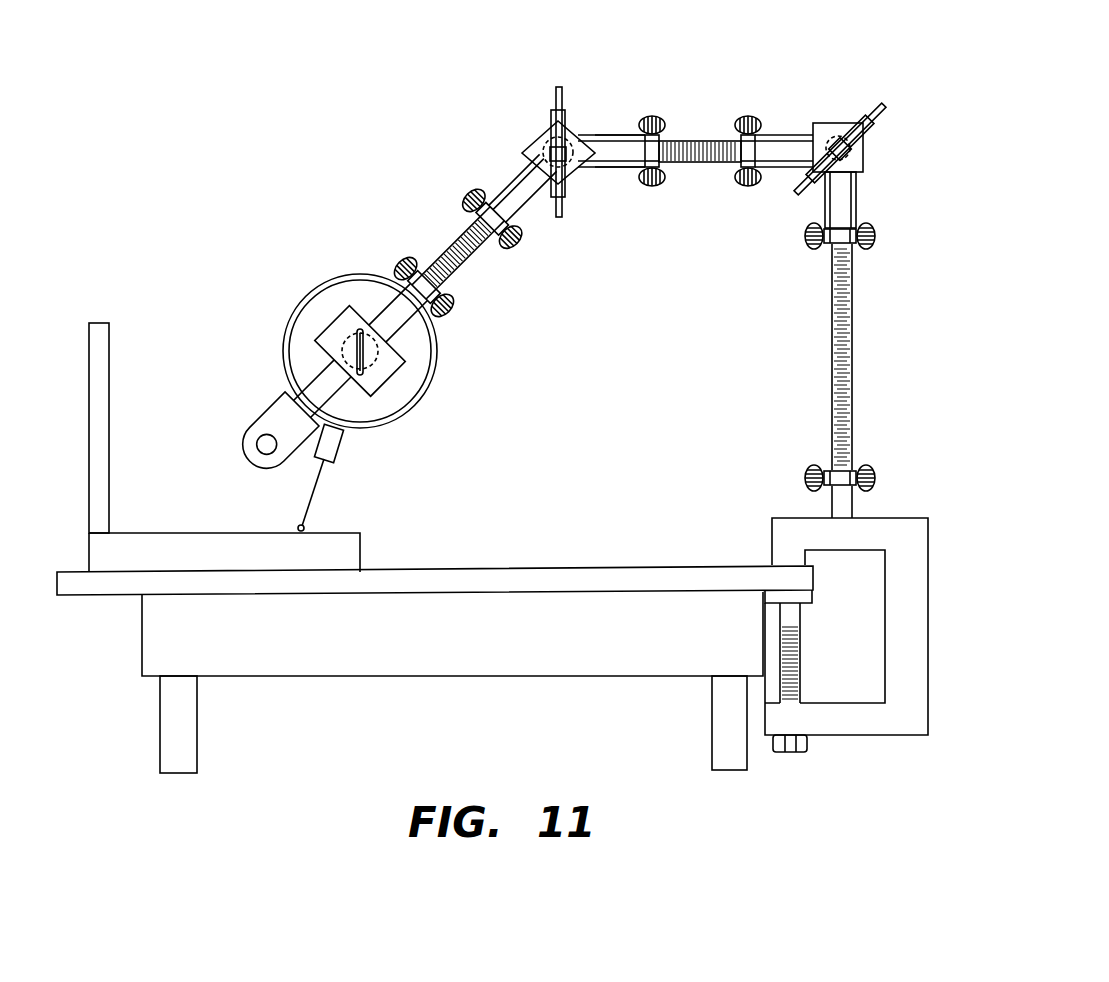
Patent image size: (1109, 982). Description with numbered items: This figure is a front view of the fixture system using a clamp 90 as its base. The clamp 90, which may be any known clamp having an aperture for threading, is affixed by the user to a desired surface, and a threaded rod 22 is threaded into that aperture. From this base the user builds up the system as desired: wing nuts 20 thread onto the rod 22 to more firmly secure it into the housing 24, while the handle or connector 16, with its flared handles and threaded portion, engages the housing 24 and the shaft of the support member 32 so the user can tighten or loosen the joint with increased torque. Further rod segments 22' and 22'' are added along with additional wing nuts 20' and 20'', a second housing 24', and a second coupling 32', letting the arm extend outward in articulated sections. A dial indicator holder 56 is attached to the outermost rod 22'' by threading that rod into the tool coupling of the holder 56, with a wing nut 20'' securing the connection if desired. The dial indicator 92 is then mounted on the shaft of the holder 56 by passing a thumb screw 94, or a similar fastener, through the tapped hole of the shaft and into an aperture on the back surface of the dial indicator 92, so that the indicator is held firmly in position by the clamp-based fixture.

The handle or connector 16 is at (860, 105).
The wing nut 20 is at (871, 365).
The wing nut 20' is at (695, 186).
The wing nut 20'' is at (497, 267).
The rod 22 is at (884, 381).
The rod 22' is at (700, 96).
The rod 22'' is at (451, 244).
The housing 24 is at (881, 200).
The housing 24' is at (619, 99).
The support member 32 is at (784, 99).
The coupling 32' is at (529, 145).
The dial indicator holder 56 is at (382, 303).
The clamp 90 is at (872, 722).
The dial indicator 92 is at (318, 310).
The thumb screw 94 is at (362, 365).